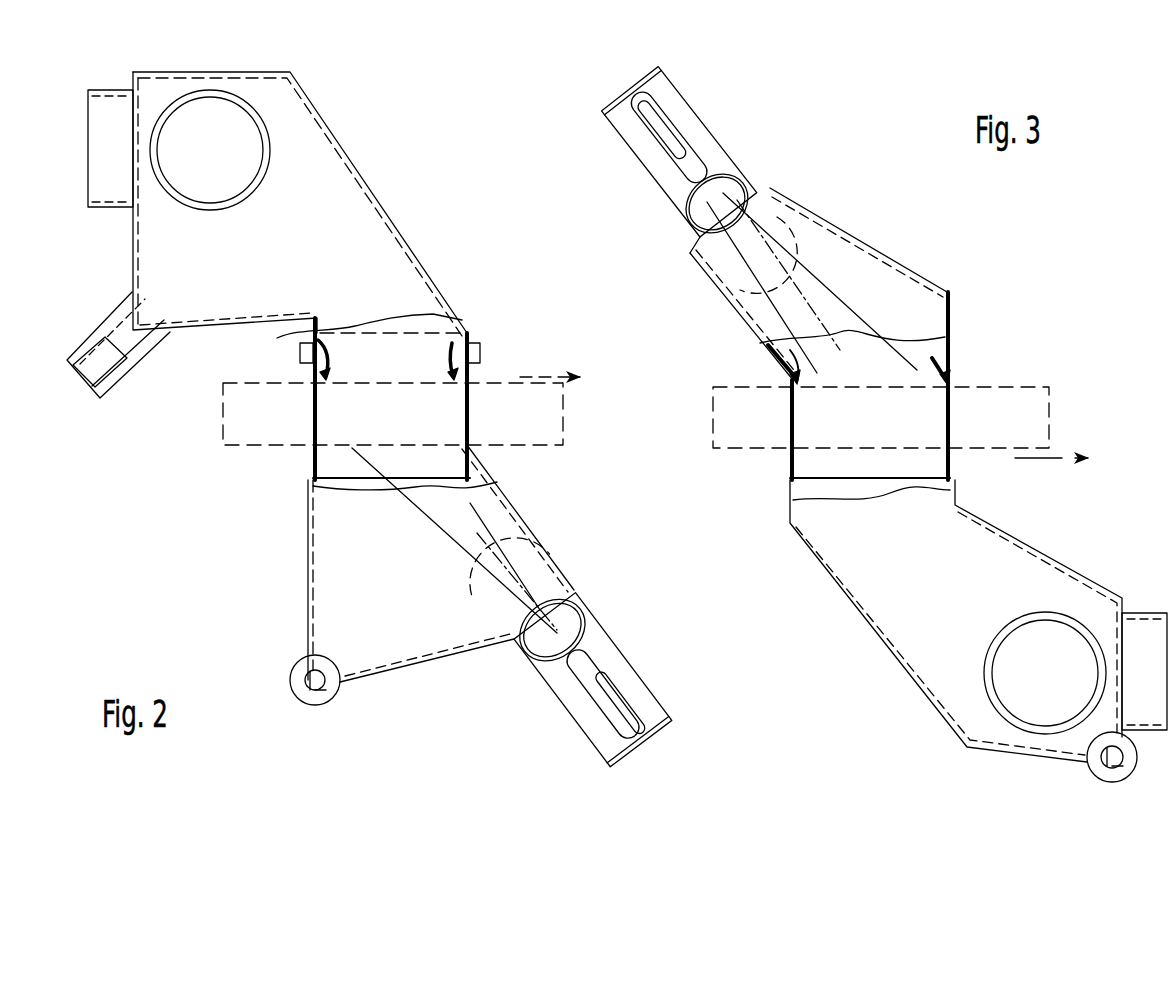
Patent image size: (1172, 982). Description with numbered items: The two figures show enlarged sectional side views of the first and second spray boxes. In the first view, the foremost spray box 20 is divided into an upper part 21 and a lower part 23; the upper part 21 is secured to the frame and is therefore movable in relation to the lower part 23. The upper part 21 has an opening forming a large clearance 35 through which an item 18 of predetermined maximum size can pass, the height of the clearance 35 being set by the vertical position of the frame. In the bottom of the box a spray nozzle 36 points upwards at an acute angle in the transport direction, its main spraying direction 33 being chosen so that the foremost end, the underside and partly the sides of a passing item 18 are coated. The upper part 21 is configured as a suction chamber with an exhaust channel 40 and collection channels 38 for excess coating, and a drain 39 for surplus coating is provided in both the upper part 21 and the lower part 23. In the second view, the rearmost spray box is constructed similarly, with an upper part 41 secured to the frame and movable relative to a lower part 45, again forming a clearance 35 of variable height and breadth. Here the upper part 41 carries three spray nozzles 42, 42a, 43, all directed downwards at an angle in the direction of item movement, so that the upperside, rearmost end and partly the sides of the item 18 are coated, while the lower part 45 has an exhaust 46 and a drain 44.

In FIG. 2, the item 18 is at (568, 428).
In FIG. 3, the item 18 is at (1052, 428).
In FIG. 2, the foremost spray box 20 is at (283, 500).
In FIG. 2, the upper part 21 is at (370, 182).
In FIG. 2, the lower part 23 is at (547, 523).
In FIG. 2, the main spraying direction 33 is at (510, 572).
In FIG. 2, the clearance 35 is at (447, 423).
In FIG. 3, the clearance 35 is at (922, 418).
In FIG. 2, the spray nozzle 36 is at (630, 697).
In FIG. 2, the collection channel 38 is at (476, 311).
In FIG. 3, the collection channel 38 is at (787, 362).
In FIG. 2, the drain 39 is at (107, 363).
In FIG. 2, the exhaust channel 40 is at (100, 128).
In FIG. 3, the upper part 41 is at (933, 277).
In FIG. 3, the spray nozzle 42 is at (698, 148).
In FIG. 3, the spray nozzle 42a is at (658, 90).
In FIG. 3, the spray nozzle 43 is at (669, 137).
In FIG. 3, the drain 44 is at (1105, 770).
In FIG. 3, the lower part 45 is at (887, 653).
In FIG. 3, the exhaust 46 is at (1060, 690).